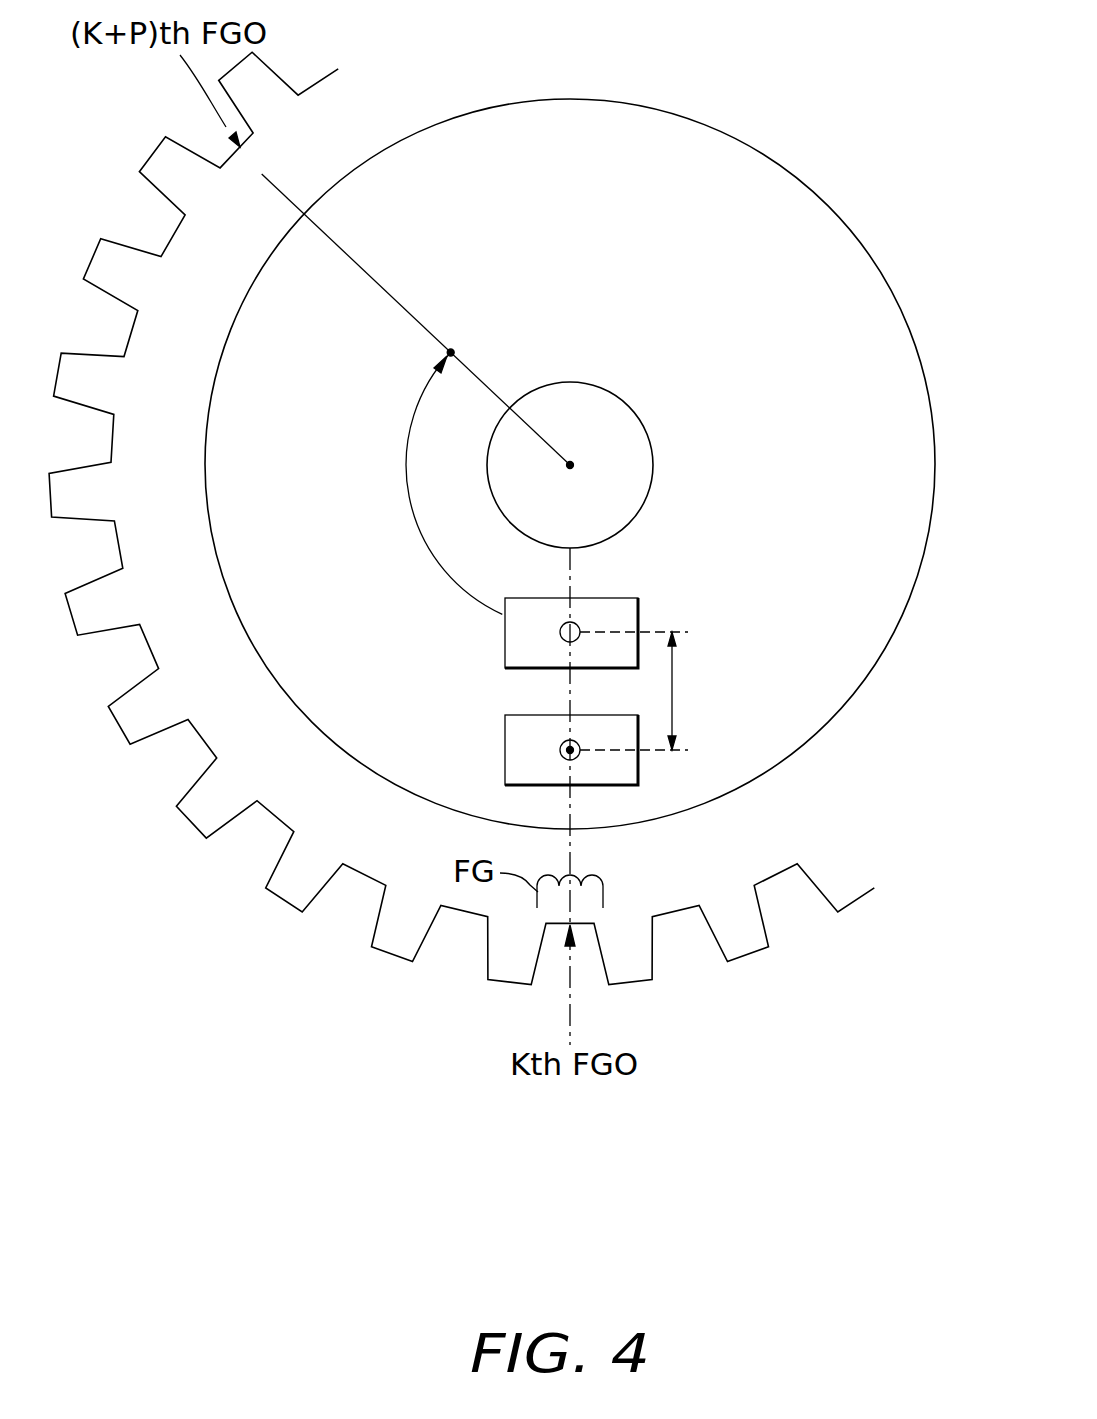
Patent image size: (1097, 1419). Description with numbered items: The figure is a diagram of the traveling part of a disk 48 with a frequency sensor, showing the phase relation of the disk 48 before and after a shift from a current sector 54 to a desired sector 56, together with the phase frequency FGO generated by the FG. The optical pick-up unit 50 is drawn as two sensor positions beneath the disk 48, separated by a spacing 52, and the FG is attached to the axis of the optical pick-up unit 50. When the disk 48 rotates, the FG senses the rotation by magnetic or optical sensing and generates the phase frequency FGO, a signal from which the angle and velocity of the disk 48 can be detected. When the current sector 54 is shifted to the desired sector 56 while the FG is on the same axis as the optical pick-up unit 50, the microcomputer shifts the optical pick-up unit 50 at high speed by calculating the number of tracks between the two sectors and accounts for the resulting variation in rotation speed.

The disk 48 is at (906, 328).
The optical pick-up unit 50 is at (505, 633).
The sensor spacing 52 is at (650, 691).
The current sector 54 is at (561, 749).
The desired sector 56 is at (451, 352).